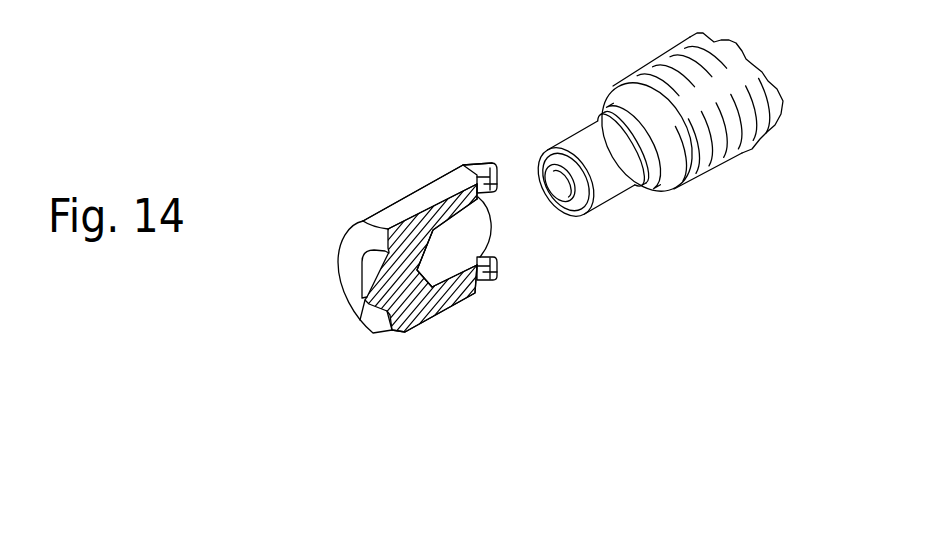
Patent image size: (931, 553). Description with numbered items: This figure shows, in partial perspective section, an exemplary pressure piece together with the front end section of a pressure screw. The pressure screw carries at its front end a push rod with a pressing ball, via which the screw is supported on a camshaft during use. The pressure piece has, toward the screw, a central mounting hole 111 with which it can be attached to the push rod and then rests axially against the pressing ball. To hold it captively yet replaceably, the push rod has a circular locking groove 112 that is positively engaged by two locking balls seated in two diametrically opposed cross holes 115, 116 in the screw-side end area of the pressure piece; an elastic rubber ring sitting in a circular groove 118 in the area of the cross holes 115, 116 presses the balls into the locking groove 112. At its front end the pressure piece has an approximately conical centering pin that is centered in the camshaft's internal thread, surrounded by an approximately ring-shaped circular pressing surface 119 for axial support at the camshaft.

The circular locking groove 112 is at (599, 117).
The central mounting hole 111 is at (472, 243).
The cross hole 115 is at (498, 182).
The cross hole 116 is at (487, 282).
The circular groove 118 is at (468, 165).
The circular pressing surface 119 is at (345, 265).